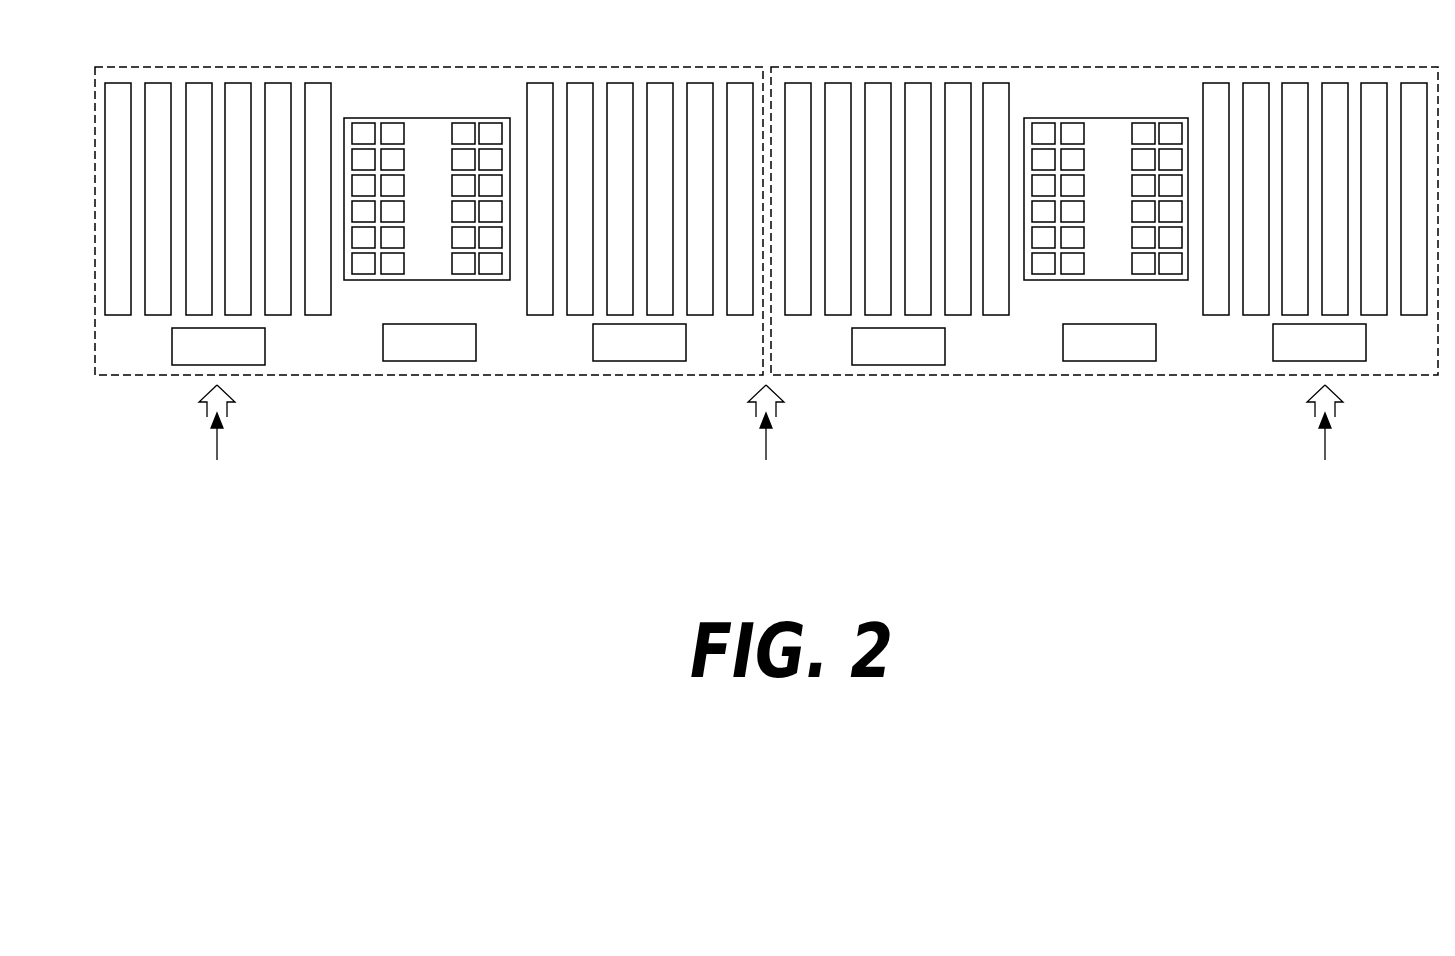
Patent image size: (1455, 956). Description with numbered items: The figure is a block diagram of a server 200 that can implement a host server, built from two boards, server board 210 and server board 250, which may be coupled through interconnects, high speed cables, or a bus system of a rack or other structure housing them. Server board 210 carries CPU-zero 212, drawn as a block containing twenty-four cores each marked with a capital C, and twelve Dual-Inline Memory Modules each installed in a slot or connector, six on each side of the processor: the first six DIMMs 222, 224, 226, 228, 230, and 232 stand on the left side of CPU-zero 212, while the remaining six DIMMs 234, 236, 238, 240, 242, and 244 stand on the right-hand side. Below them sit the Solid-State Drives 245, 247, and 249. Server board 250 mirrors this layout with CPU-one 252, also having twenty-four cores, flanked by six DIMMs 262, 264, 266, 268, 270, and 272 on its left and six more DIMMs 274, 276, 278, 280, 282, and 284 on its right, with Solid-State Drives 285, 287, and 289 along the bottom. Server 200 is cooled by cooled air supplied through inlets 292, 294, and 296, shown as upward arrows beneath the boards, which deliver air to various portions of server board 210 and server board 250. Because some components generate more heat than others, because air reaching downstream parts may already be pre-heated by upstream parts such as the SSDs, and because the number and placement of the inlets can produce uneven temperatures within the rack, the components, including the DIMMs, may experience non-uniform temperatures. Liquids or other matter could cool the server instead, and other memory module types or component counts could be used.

The server 200 is at (812, 587).
The server board 210 is at (444, 95).
The CPU-0 212 is at (418, 220).
The DIMM 0 222 is at (117, 199).
The DIMM 1 224 is at (157, 199).
The DIMM 2 226 is at (198, 199).
The DIMM 3 228 is at (237, 199).
The DIMM 4 230 is at (277, 199).
The DIMM 5 232 is at (317, 199).
The DIMM 6 234 is at (539, 199).
The DIMM 7 236 is at (579, 199).
The DIMM 8 238 is at (619, 199).
The DIMM 9 240 is at (659, 199).
The DIMM 10 242 is at (699, 199).
The DIMM 11 244 is at (739, 199).
The Solid-State Drive 245 is at (250, 358).
The Solid-State Drive 247 is at (461, 354).
The Solid-State Drive 249 is at (671, 354).
The server board 250 is at (1118, 95).
The CPU-1 252 is at (1097, 220).
The DIMM 0 262 is at (797, 199).
The DIMM 1 264 is at (837, 199).
The DIMM 2 266 is at (877, 199).
The DIMM 3 268 is at (917, 199).
The DIMM 4 270 is at (957, 199).
The DIMM 5 272 is at (995, 199).
The DIMM 6 274 is at (1215, 199).
The DIMM 7 276 is at (1255, 199).
The DIMM 8 278 is at (1294, 199).
The DIMM 9 280 is at (1334, 199).
The DIMM 10 282 is at (1373, 199).
The DIMM 11 284 is at (1413, 199).
The Solid-State Drive 285 is at (930, 358).
The Solid-State Drive 287 is at (1141, 354).
The Solid-State Drive 289 is at (1351, 354).
The inlet 292 is at (206, 389).
The inlet 294 is at (756, 389).
The inlet 296 is at (1316, 389).